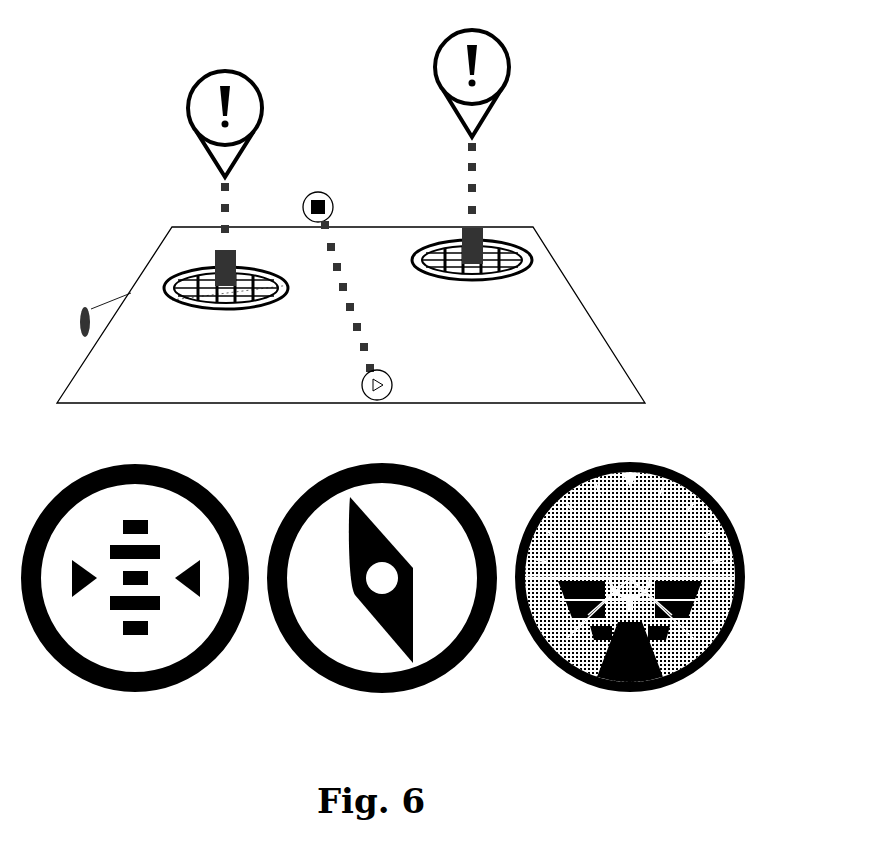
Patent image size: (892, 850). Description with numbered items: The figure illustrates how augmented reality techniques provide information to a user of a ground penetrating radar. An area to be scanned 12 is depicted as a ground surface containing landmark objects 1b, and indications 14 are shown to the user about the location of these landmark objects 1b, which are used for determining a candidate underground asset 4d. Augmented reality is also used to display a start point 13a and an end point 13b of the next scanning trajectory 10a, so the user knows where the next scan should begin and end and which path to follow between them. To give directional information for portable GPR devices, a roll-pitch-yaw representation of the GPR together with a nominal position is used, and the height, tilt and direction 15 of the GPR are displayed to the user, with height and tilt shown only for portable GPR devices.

The indication 14 is at (387, 131).
The end point 13b is at (369, 191).
The landmark object 1b is at (388, 258).
The candidate underground asset 4d is at (337, 309).
The area to be scanned 12 is at (351, 315).
The travel route 10a is at (395, 296).
The start point 13a is at (430, 401).
The height, tilt and direction 15 is at (600, 440).